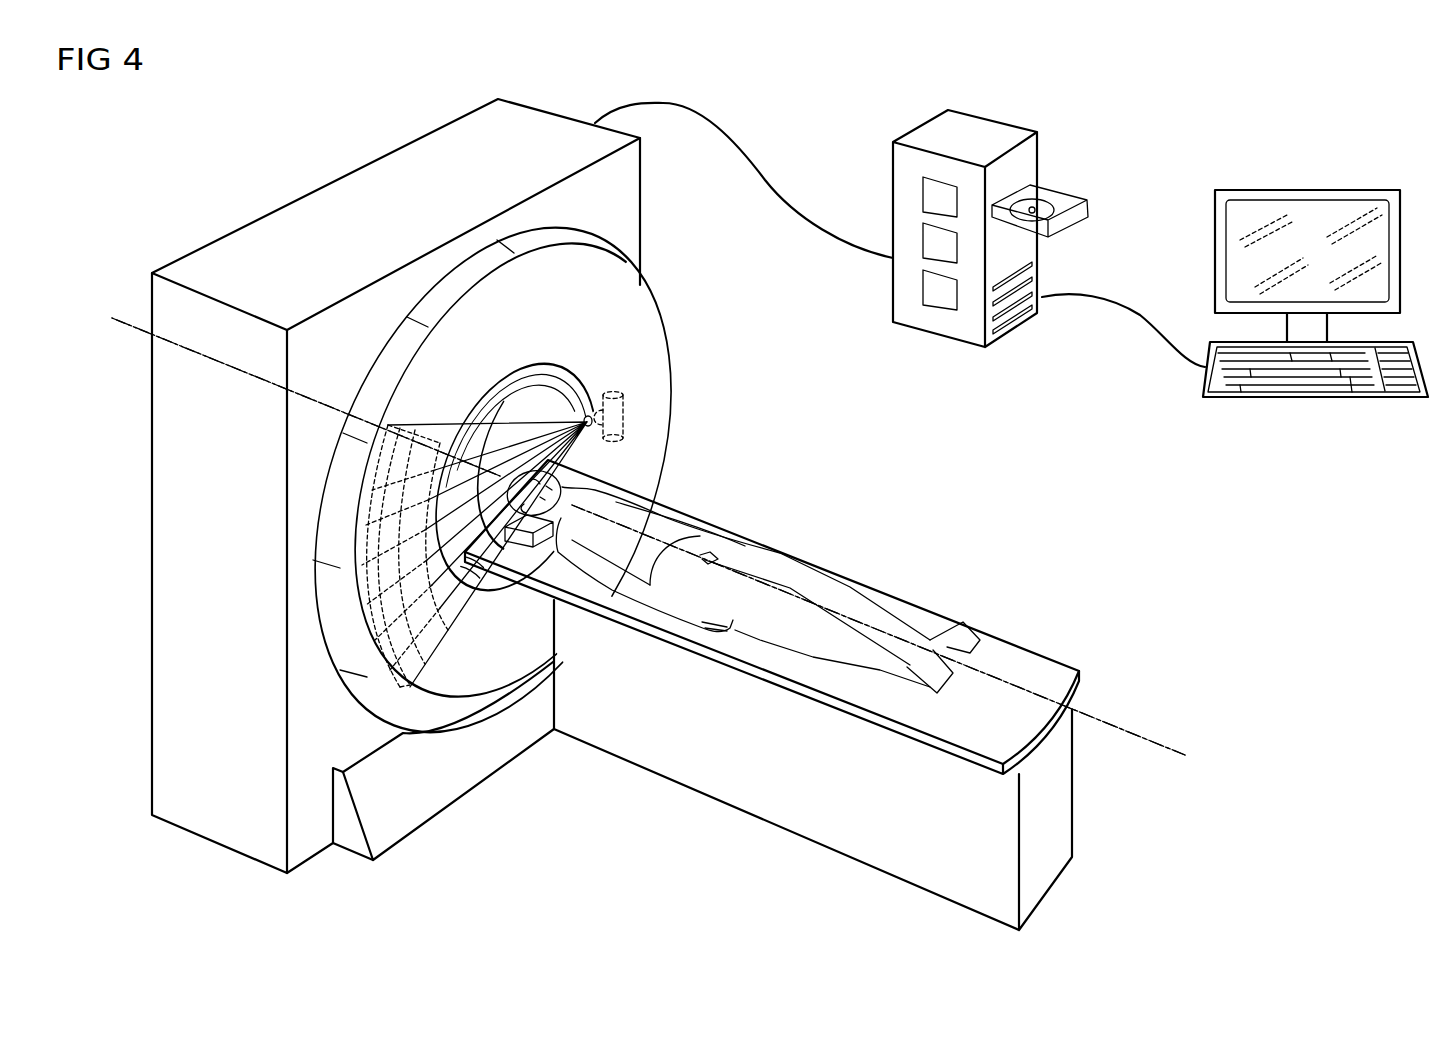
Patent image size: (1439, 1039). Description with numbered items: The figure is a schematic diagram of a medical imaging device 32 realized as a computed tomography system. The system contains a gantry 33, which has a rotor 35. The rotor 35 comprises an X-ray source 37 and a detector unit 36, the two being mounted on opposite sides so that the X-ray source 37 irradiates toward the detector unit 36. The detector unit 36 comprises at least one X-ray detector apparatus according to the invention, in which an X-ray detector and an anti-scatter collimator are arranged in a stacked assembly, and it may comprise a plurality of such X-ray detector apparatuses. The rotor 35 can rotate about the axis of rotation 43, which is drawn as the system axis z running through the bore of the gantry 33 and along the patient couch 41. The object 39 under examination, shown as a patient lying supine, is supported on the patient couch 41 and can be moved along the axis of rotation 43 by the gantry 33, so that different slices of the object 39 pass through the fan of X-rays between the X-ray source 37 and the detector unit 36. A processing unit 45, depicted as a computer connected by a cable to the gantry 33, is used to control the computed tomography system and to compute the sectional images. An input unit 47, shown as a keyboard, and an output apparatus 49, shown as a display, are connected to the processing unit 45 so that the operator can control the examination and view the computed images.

The medical imaging device 32 is at (120, 650).
The gantry 33 is at (205, 225).
The rotor 35 is at (640, 330).
The detector unit 36 is at (416, 660).
The X-ray source 37 is at (625, 418).
The object under examination 39 is at (790, 565).
The patient couch 41 is at (747, 802).
The axis of rotation 43 is at (133, 327).
The processing unit 45 is at (977, 130).
The input unit 47 is at (1203, 387).
The output apparatus 49 is at (1306, 196).